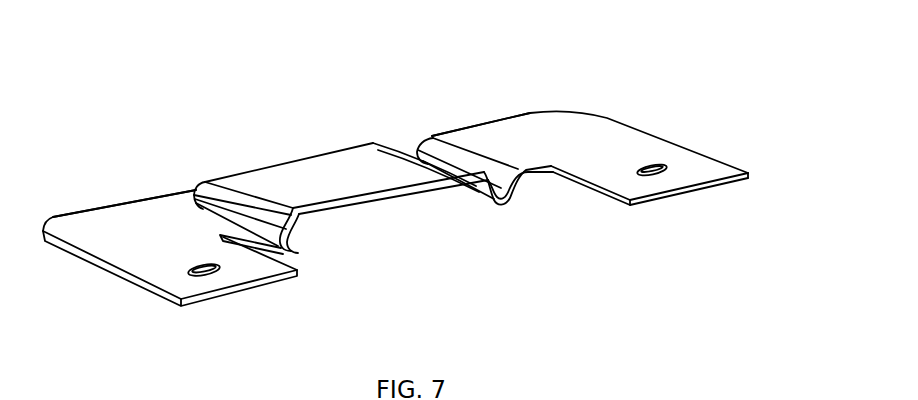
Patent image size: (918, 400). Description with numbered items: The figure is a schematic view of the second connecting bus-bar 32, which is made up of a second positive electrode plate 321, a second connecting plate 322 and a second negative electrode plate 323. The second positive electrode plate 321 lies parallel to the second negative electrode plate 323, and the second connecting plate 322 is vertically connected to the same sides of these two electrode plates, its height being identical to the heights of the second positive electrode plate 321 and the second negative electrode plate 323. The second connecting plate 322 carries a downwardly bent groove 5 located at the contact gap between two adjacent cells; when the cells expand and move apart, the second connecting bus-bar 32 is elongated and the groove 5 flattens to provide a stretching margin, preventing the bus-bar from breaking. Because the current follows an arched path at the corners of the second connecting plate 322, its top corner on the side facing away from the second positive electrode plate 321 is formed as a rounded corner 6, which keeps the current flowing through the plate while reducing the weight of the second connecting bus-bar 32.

The second connecting bus-bar 32 is at (52, 108).
The second positive electrode plate 321 is at (242, 270).
The second connecting plate 322 is at (347, 172).
The second negative electrode plate 323 is at (668, 158).
The groove 5 is at (196, 204).
The rounded corner 6 is at (87, 213).